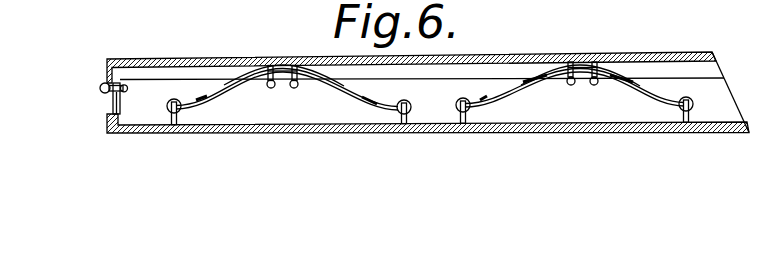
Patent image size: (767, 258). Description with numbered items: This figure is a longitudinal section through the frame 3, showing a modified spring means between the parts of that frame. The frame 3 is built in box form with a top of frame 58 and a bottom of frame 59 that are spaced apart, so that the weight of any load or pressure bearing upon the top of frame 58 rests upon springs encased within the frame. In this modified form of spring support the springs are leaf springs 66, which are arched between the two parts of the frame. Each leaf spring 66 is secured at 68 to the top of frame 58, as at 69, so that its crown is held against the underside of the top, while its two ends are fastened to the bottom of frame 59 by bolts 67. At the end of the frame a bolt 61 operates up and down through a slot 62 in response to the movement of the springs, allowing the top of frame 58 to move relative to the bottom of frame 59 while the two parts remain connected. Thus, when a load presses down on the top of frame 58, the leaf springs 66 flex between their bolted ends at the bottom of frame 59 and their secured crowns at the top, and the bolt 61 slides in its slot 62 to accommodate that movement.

The frame 3 is at (645, 53).
The top of frame 58 is at (107, 63).
The bottom of frame 59 is at (137, 133).
The bolts 61 is at (100, 87).
The slots 62 is at (113, 105).
The leaf springs 66 is at (231, 95).
The bolts 67 is at (175, 128).
The securing point of leaf springs 68 is at (593, 66).
The fastening of leaf springs to top of frame 69 is at (281, 88).